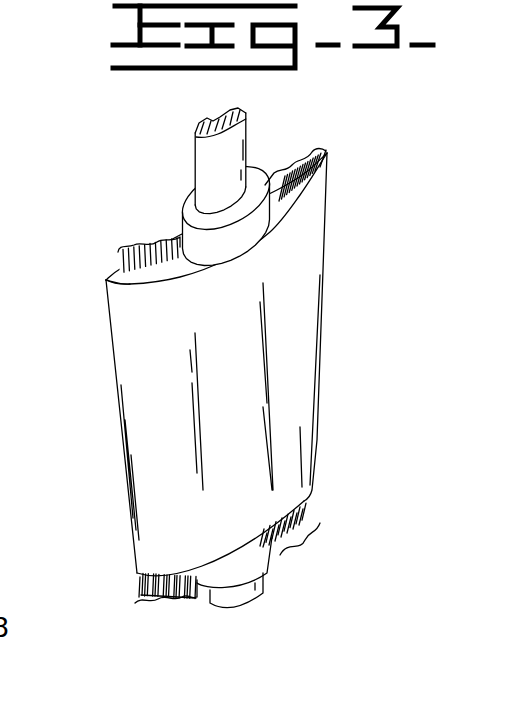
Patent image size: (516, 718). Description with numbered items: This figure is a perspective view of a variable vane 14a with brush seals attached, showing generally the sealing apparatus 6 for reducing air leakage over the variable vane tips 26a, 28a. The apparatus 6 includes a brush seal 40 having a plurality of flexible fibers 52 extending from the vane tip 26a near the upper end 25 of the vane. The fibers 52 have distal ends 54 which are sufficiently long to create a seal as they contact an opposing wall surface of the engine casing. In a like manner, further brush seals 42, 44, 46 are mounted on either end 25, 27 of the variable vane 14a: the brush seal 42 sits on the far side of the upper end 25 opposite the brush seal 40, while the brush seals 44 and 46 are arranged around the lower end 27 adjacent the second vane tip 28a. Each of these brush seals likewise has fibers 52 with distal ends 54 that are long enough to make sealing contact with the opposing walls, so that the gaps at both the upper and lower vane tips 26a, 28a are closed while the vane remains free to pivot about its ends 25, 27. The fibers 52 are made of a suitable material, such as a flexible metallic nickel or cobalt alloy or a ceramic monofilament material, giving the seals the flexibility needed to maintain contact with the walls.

The sealing apparatus 6 is at (114, 201).
The vane end 25 is at (170, 228).
The brush seal 40 is at (150, 237).
The variable vane tip 26a is at (112, 280).
The variable vane 14a is at (296, 302).
The brush seal 42 is at (297, 153).
The variable vane tip 28a is at (315, 506).
The brush seal 44 is at (300, 542).
The vane end 27 is at (280, 577).
The brush seal 46 is at (172, 600).
The flexible fibers 52 is at (138, 586).
The distal ends 54 is at (140, 595).